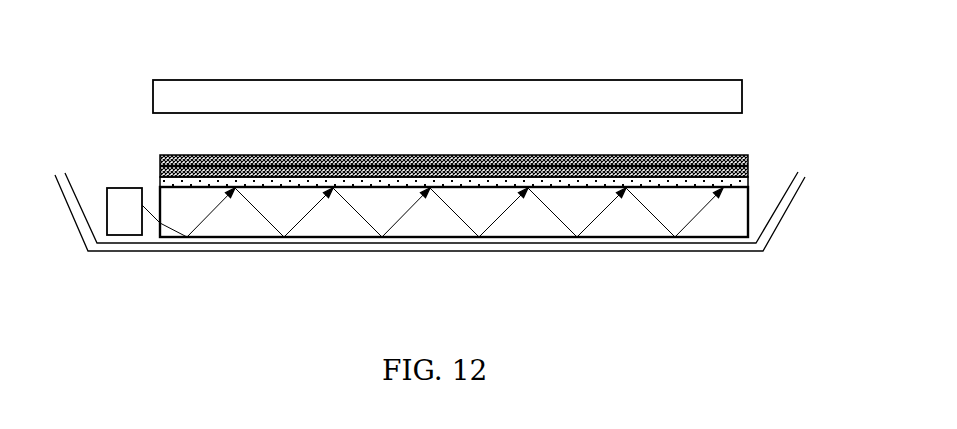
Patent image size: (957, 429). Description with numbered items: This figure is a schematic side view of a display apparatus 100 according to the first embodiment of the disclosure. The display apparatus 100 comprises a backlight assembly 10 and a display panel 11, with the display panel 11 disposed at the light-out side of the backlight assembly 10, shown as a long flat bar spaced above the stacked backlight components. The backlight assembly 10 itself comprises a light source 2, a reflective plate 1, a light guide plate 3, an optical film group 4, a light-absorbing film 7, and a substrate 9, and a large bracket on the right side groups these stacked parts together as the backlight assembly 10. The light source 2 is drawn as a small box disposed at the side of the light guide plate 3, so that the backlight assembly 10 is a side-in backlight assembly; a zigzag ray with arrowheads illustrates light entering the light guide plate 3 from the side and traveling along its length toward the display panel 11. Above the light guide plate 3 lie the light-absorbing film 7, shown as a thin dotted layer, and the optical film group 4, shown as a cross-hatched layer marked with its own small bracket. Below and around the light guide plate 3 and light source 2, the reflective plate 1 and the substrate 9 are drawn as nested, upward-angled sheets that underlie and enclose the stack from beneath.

The display apparatus 100 is at (184, 37).
The display panel 11 is at (730, 95).
The backlight assembly 10 is at (848, 152).
The optical film group 4 is at (752, 155).
The light-absorbing film 7 is at (433, 183).
The light guide plate 3 is at (728, 211).
The light source 2 is at (118, 215).
The reflective plate 1 is at (730, 244).
The substrate 9 is at (766, 247).